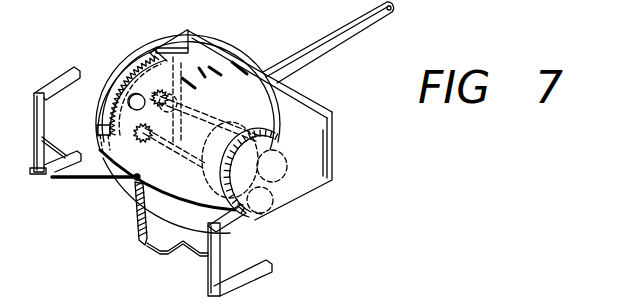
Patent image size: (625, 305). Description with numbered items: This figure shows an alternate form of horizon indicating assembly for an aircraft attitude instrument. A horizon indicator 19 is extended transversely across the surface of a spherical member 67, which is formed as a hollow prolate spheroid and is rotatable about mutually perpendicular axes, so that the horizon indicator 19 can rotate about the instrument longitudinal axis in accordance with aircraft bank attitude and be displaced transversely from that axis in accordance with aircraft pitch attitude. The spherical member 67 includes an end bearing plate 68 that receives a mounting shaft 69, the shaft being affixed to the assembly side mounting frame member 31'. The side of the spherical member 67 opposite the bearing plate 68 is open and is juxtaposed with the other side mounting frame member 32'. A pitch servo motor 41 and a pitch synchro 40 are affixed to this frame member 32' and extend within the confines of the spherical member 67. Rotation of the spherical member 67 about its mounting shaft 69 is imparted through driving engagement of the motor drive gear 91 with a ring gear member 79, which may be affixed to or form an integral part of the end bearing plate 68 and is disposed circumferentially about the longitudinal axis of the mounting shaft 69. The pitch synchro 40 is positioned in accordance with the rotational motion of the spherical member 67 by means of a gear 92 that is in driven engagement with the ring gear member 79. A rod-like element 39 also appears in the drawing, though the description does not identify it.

The horizon indicator 19 is at (153, 186).
The side mounting frame member 31' is at (166, 37).
The side mounting frame member 32' is at (312, 166).
The handle rod 39 is at (313, 44).
The pitch synchro 40 is at (236, 126).
The pitch servo motor 41 is at (265, 220).
The spherical member 67 is at (231, 103).
The end bearing plate 68 is at (143, 80).
The mounting shaft 69 is at (117, 90).
The ring gear member 79 is at (108, 106).
The motor drive gear 91 is at (134, 137).
The gear 92 is at (198, 45).